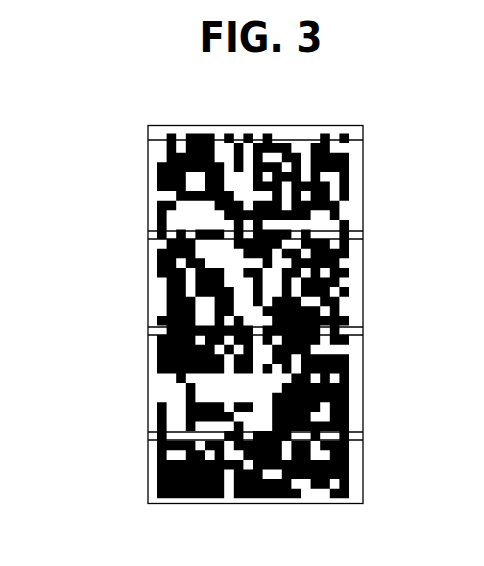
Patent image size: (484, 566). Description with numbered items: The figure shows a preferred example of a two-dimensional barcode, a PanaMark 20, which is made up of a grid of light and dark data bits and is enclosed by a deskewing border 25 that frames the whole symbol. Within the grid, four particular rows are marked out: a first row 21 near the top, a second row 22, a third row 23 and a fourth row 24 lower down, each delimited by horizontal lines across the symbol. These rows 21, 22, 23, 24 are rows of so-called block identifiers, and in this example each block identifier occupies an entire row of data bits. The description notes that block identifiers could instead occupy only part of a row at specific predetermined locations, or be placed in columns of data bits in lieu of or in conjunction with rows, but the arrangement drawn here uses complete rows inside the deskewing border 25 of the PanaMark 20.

The PanaMark 20 is at (110, 199).
The row of block identifiers 21 is at (164, 139).
The row of block identifiers 22 is at (164, 234).
The row of block identifiers 23 is at (160, 335).
The row of block identifiers 24 is at (160, 438).
The deskewing border 25 is at (366, 502).